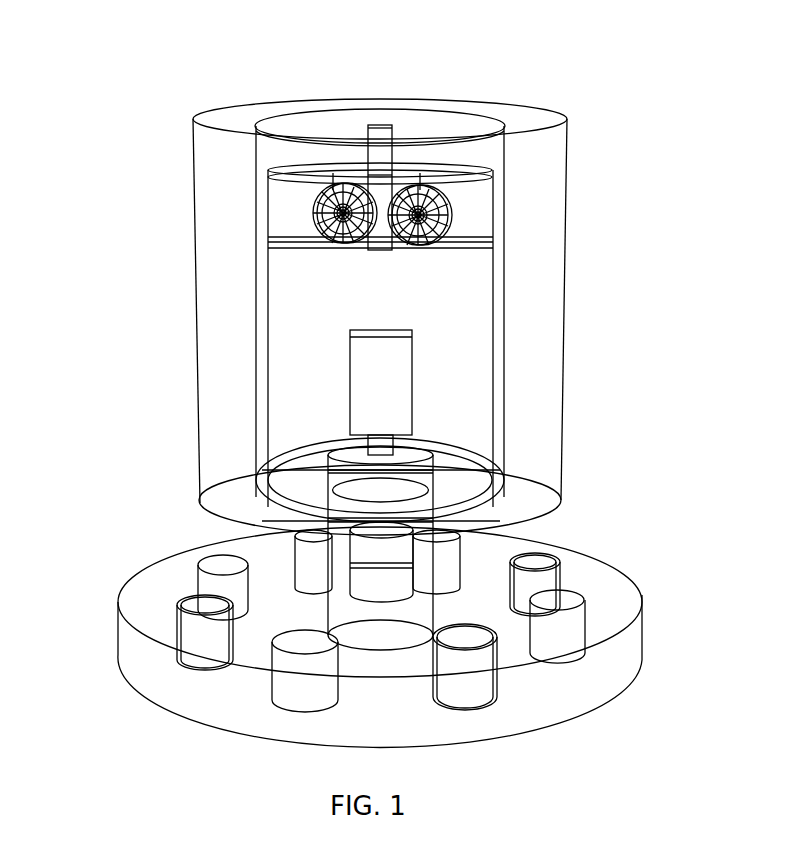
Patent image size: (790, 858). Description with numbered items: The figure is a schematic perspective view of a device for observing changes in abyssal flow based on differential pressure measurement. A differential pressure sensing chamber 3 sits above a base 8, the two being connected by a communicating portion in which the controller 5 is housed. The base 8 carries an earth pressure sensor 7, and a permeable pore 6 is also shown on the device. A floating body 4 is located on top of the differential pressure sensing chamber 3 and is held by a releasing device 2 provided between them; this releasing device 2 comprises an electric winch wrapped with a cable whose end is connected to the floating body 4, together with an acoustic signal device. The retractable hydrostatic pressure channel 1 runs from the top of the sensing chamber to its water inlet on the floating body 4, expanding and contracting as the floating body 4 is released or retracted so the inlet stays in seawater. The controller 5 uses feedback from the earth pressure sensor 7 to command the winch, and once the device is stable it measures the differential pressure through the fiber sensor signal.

The hydrostatic pressure channel 1 is at (294, 131).
The releasing device 2 is at (476, 315).
The differential pressure sensing chamber 3 is at (248, 331).
The floating body 4 is at (433, 317).
The controller 5 is at (249, 476).
The permeable pore 6 is at (142, 532).
The earth pressure sensor 7 is at (135, 590).
The base 8 is at (405, 639).